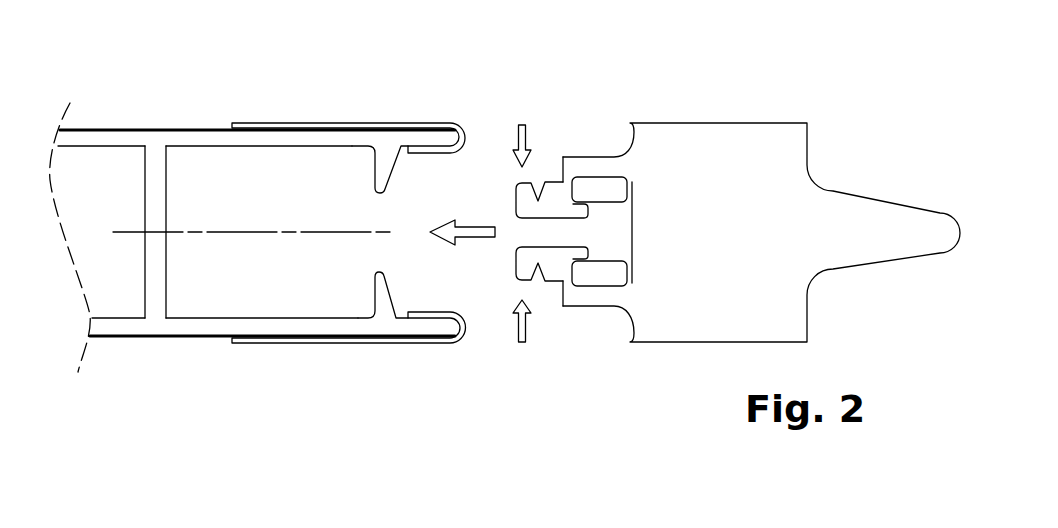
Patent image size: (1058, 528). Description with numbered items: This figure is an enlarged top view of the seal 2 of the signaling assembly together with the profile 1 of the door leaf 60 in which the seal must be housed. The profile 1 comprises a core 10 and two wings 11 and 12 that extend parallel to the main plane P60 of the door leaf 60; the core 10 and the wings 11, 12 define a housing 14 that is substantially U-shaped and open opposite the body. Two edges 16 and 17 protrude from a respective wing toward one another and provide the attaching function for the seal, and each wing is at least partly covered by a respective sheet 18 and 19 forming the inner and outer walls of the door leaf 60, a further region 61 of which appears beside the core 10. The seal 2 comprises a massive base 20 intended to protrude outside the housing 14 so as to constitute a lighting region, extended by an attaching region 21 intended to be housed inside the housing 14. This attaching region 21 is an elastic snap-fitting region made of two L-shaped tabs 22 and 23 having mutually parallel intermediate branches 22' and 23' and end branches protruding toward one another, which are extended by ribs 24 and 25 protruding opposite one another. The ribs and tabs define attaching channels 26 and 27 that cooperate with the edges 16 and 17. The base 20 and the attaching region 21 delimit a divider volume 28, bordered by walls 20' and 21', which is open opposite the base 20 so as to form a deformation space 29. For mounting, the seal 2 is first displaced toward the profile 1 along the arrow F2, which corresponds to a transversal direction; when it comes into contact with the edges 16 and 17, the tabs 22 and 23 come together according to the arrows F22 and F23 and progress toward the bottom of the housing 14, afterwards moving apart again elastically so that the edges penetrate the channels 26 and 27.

The profile 1 is at (165, 95).
The structure / support 60 is at (154, 365).
The support portion 61 is at (101, 232).
The core 10 is at (155, 245).
The wing 11 is at (200, 132).
The wing 12 is at (195, 330).
The housing 14 is at (262, 232).
The main plane of the door leaf P60 is at (252, 218).
The edge 16 is at (375, 182).
The edge 17 is at (375, 278).
The sheet 18 is at (460, 122).
The sheet 19 is at (445, 344).
The seal 2 is at (697, 355).
The base 20 is at (761, 232).
The wall of the base 20' is at (685, 197).
The attaching region 21 is at (656, 418).
The wall of the attaching region 21' is at (636, 175).
The tab 22 is at (597, 55).
The intermediate branch 22' is at (603, 128).
The tab 23 is at (576, 403).
The intermediate branch 23' is at (594, 333).
The rib 24 is at (525, 187).
The rib 25 is at (535, 267).
The attaching channel 26 is at (537, 198).
The attaching channel 27 is at (620, 263).
The divider volume 28 is at (598, 232).
The deformation space 29 is at (518, 228).
The arrow F2 is at (456, 245).
The arrow F22 is at (507, 132).
The arrow F23 is at (507, 335).